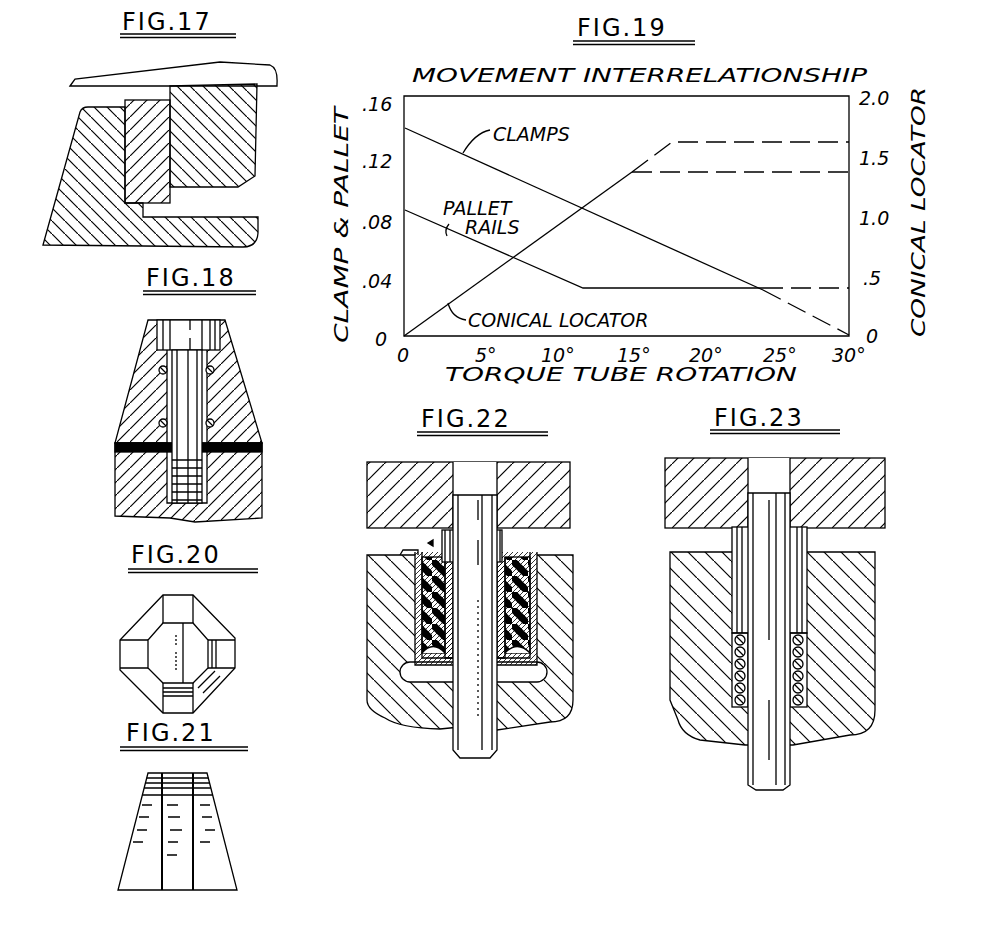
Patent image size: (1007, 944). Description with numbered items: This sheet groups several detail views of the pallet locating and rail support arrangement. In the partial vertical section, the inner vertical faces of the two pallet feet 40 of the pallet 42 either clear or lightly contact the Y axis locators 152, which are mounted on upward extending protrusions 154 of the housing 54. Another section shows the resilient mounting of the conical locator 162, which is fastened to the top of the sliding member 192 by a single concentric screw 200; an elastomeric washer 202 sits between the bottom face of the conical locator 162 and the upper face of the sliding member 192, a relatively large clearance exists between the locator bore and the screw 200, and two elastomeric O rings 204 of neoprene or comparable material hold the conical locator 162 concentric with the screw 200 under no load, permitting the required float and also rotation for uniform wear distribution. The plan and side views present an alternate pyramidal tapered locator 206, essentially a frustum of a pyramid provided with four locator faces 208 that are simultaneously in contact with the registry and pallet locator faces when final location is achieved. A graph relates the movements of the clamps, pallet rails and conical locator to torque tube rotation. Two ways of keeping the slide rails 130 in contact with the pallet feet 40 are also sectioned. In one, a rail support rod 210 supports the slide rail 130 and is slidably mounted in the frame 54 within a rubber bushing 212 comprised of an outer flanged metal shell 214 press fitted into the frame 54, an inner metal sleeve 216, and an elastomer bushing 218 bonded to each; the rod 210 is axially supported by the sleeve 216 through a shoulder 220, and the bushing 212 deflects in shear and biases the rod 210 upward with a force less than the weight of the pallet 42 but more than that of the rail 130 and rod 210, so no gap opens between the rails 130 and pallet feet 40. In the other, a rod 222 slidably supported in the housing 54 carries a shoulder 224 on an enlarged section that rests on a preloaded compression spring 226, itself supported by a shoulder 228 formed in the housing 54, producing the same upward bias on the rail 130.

In FIG. 17, the pallet 42 is at (275, 68).
In FIG. 17, the pallet feet 40 is at (260, 157).
In FIG. 17, the Y axis locators 152 is at (170, 200).
In FIG. 17, the protrusions 154 is at (73, 163).
In FIG. 18, the conical locator 162 is at (247, 383).
In FIG. 18, the sliding member 192 is at (132, 490).
In FIG. 18, the screw 200 is at (200, 320).
In FIG. 18, the elastomeric washer 202 is at (263, 447).
In FIG. 18, the elastomeric O rings 204 is at (158, 425).
In FIG. 20, the pyramidal tapered locator 206 is at (237, 657).
In FIG. 21, the pyramidal tapered locator 206 is at (208, 777).
In FIG. 20, the locator faces 208 is at (213, 623).
In FIG. 21, the locator faces 208 is at (138, 870).
In FIG. 22, the slide rail 130 is at (375, 503).
In FIG. 23, the slide rail 130 is at (668, 490).
In FIG. 22, the rubber bushing 212 is at (430, 543).
In FIG. 22, the outer flanged metal shell 214 is at (400, 548).
In FIG. 22, the shoulder 220 is at (503, 532).
In FIG. 22, the inner metal sleeve 216 is at (498, 593).
In FIG. 22, the elastomer bushing 218 is at (520, 618).
In FIG. 22, the housing 54 is at (575, 690).
In FIG. 23, the housing 54 is at (853, 730).
In FIG. 22, the rail support rod 210 is at (485, 752).
In FIG. 23, the shoulder 224 is at (732, 633).
In FIG. 23, the compression spring 226 is at (743, 693).
In FIG. 23, the shoulder 228 is at (740, 710).
In FIG. 23, the rod 222 is at (773, 777).